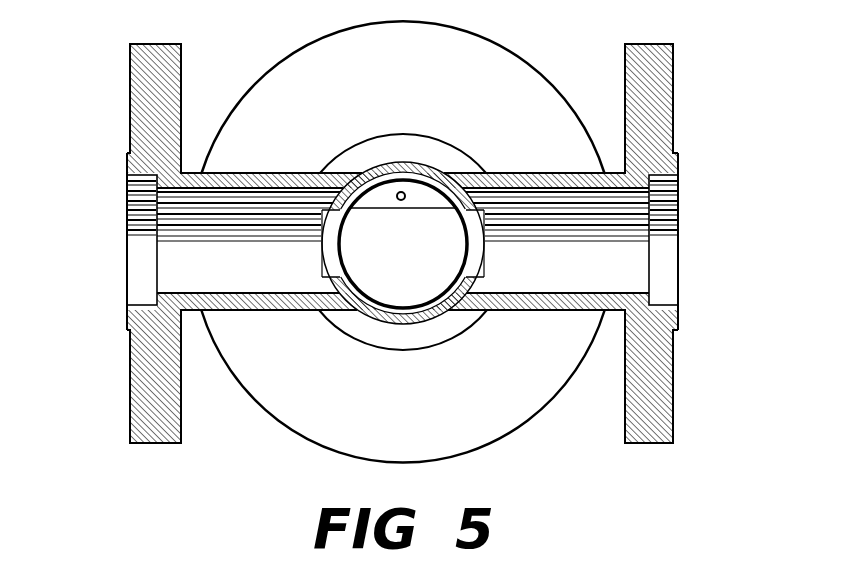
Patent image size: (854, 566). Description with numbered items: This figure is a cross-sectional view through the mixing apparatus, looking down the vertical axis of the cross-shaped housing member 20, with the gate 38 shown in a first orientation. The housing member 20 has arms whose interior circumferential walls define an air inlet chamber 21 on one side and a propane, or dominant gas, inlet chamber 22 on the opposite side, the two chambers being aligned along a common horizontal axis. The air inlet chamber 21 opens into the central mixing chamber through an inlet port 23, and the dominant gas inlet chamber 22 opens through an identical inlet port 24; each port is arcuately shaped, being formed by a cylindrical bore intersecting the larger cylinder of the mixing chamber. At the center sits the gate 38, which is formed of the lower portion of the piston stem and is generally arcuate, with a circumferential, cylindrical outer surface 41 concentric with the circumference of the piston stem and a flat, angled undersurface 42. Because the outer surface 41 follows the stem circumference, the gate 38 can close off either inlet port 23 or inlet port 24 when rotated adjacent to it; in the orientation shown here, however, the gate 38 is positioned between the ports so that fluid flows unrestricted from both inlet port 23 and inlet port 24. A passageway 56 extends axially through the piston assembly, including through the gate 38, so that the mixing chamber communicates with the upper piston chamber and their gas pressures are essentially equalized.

The housing member 20 is at (533, 396).
The air inlet chamber 21 is at (588, 282).
The dominant gas inlet chamber 22 is at (217, 264).
The inlet port 23 is at (475, 250).
The inlet port 24 is at (331, 250).
The gate 38 is at (427, 161).
The cylindrical outer surface 41 is at (376, 161).
The angled undersurface 42 is at (447, 256).
The passageway 56 is at (401, 200).